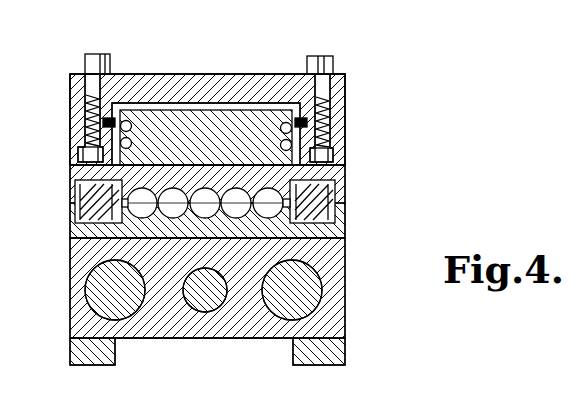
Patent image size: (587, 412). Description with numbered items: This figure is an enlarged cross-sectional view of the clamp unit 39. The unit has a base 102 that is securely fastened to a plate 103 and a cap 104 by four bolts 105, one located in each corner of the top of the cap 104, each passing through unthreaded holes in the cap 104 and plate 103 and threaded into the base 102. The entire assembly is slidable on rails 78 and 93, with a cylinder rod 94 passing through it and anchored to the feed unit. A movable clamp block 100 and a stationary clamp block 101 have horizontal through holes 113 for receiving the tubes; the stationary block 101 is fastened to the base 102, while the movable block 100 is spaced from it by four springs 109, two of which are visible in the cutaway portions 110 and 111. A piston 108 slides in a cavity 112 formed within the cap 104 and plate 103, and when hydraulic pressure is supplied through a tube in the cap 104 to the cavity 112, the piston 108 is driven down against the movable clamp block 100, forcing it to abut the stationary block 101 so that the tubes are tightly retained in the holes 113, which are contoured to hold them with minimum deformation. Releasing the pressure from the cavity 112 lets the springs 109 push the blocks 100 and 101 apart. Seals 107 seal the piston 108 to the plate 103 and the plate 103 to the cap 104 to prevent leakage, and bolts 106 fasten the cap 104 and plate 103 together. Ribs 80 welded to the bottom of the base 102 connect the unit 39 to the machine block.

The clamp unit 39 is at (229, 52).
The cap 104 is at (340, 76).
The bolts 105 is at (100, 56).
The plate 103 is at (76, 137).
The seals 107 is at (304, 122).
The bolts 106 is at (289, 147).
The piston 108 is at (268, 104).
The cavity 112 is at (196, 104).
The movable clamp block 100 is at (345, 177).
The stationary clamp block 101 is at (340, 225).
The cutaway portion 110 is at (338, 192).
The cutaway portion 111 is at (76, 181).
The springs 109 is at (74, 208).
The through holes 113 is at (175, 209).
The base 102 is at (72, 274).
The rail 78 is at (97, 295).
The cylinder rod 94 is at (203, 290).
The rail 93 is at (310, 292).
The ribs 80 is at (103, 360).